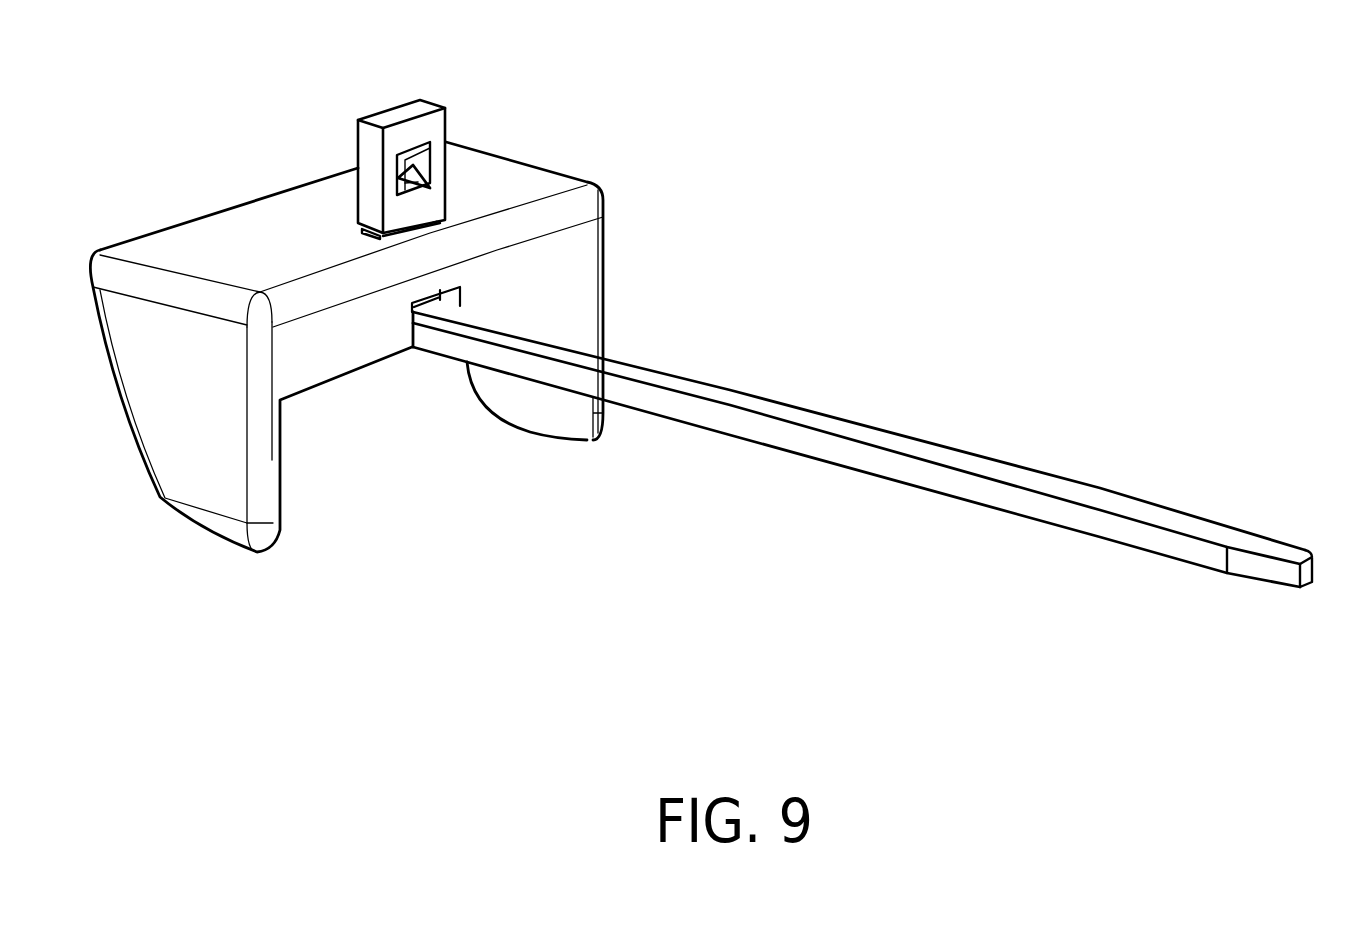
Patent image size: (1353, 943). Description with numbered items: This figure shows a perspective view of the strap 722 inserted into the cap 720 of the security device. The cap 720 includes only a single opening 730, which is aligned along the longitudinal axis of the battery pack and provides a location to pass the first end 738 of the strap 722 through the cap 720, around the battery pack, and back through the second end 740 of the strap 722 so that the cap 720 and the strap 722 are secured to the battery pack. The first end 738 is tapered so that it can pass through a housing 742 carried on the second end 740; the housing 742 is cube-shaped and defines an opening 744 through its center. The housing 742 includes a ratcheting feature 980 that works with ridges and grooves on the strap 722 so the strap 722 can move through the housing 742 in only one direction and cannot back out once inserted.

The cap 720 is at (303, 220).
The strap 722 is at (868, 405).
The opening 730 is at (384, 238).
The first end 738 is at (1262, 540).
The second end 740 is at (413, 313).
The housing 742 is at (408, 116).
The opening 744 is at (422, 157).
The ratcheting feature 980 is at (435, 185).